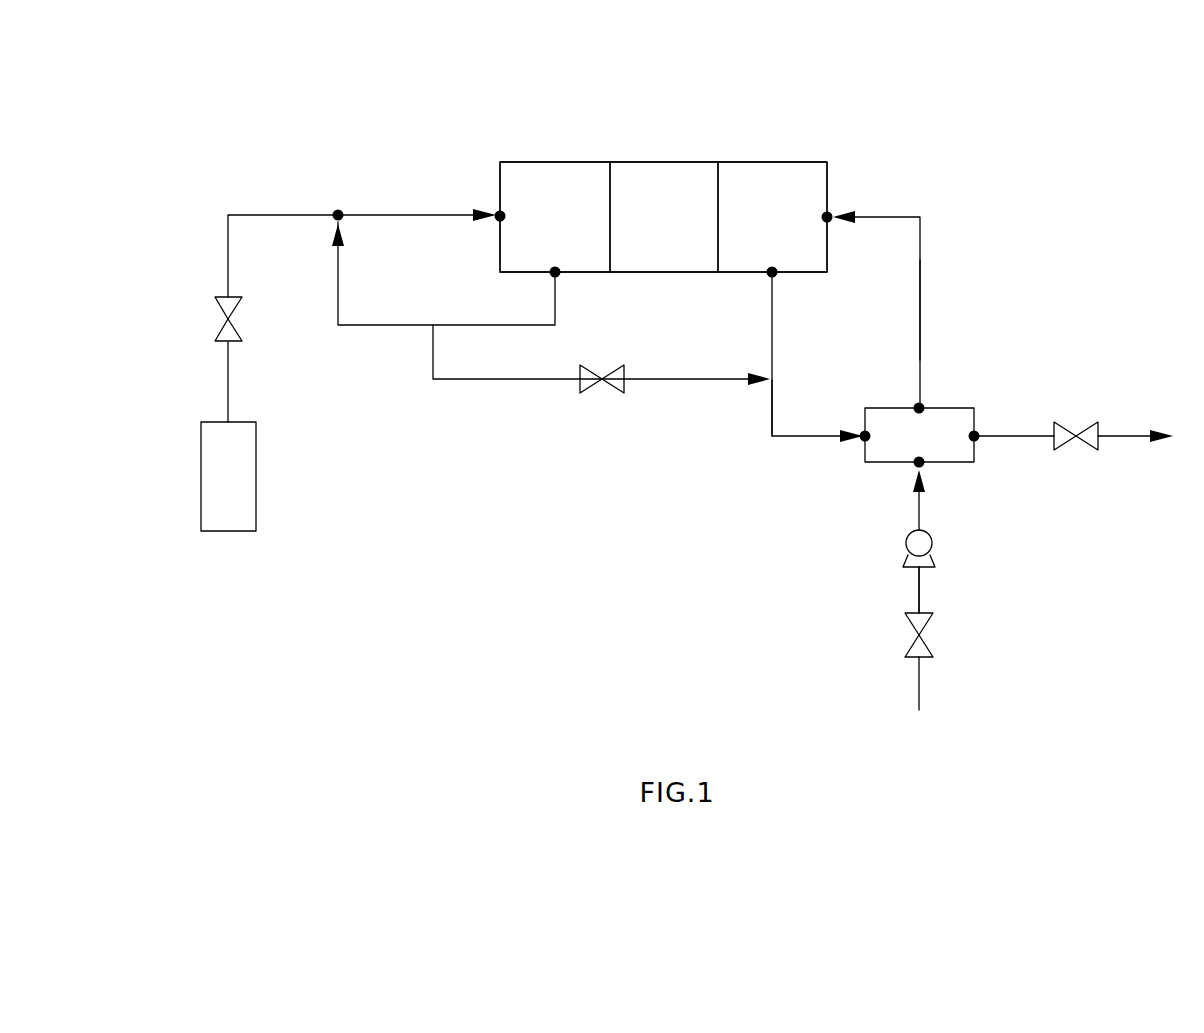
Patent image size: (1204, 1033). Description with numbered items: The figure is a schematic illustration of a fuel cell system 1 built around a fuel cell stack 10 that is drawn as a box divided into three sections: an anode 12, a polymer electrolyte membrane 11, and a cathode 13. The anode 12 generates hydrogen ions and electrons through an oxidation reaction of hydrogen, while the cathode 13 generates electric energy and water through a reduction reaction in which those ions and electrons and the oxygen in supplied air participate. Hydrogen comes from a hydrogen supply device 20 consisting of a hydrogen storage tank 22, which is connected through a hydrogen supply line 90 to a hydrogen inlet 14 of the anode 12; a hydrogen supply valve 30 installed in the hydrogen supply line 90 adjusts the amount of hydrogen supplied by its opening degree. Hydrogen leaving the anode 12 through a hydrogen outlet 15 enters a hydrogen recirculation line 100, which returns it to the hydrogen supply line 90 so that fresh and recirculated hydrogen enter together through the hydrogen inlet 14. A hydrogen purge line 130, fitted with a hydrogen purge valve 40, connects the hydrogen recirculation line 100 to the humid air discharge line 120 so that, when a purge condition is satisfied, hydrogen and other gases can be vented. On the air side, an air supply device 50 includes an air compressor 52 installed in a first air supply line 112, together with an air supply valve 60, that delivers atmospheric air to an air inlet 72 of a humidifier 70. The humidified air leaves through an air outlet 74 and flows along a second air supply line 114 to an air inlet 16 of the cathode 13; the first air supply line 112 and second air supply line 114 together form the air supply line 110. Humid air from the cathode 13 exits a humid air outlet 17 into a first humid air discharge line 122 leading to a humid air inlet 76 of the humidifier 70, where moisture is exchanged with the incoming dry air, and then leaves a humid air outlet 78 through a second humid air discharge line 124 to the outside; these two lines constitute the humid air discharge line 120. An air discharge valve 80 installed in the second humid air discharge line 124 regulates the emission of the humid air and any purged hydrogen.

The fuel cell system 1 is at (181, 90).
The fuel cell stack 10 is at (690, 206).
The polymer electrolyte membrane 11 is at (662, 160).
The anode 12 is at (554, 160).
The cathode 13 is at (770, 160).
The hydrogen inlet 14 is at (497, 221).
The hydrogen outlet 15 is at (553, 277).
The air inlet 16 is at (831, 222).
The humid air outlet 17 is at (776, 277).
The hydrogen supply device 20 is at (292, 487).
The hydrogen storage tank 22 is at (229, 533).
The hydrogen supply valve 30 is at (213, 312).
The hydrogen purge valve 40 is at (593, 395).
The air supply device 50 is at (942, 590).
The air compressor 52 is at (904, 540).
The air supply valve 60 is at (928, 640).
The humidifier 70 is at (955, 405).
The air inlet 72 is at (914, 469).
The air outlet 74 is at (915, 404).
The humid air inlet 76 is at (862, 432).
The humid air outlet 78 is at (977, 440).
The air discharge valve 80 is at (1085, 422).
The hydrogen supply line 90 is at (262, 213).
The hydrogen recirculation line 100 is at (374, 326).
The air supply line 110 is at (960, 309).
The first air supply line 112 is at (917, 587).
The second air supply line 114 is at (922, 312).
The humid air discharge line 120 is at (778, 400).
The first humid air discharge line 122 is at (770, 415).
The second humid air discharge line 124 is at (1011, 433).
The hydrogen purge line 130 is at (601, 388).